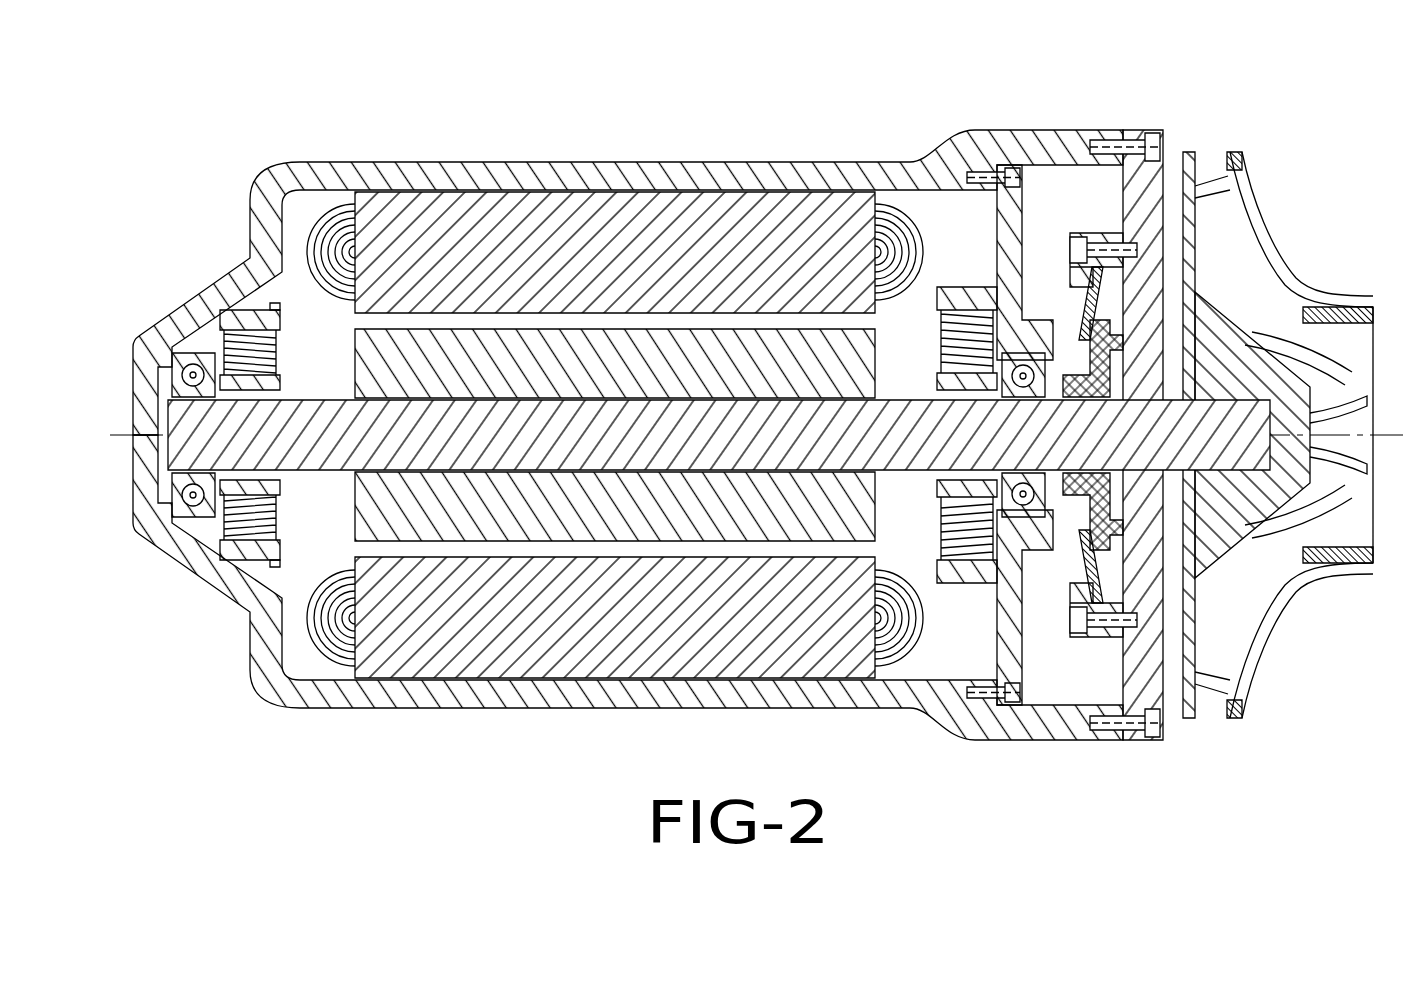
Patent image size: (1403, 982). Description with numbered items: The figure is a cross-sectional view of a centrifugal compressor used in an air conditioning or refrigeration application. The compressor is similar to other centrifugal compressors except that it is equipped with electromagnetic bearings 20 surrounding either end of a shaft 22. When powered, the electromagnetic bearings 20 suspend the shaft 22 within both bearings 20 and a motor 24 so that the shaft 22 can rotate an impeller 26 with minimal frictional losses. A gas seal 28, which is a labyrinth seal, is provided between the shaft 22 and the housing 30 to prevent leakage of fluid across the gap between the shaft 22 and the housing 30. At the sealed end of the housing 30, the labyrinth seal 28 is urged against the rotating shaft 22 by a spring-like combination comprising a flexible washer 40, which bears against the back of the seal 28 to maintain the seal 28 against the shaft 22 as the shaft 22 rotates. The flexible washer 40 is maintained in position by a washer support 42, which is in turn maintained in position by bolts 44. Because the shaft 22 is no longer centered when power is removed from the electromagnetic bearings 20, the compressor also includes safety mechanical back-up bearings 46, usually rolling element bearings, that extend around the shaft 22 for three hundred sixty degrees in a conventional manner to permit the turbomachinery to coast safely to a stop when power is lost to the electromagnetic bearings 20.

The electromagnetic bearings 20 is at (235, 317).
The shaft 22 is at (327, 407).
The motor 24 is at (501, 237).
The impeller 26 is at (1240, 177).
The gas seal 28 is at (1123, 342).
The housing 30 is at (656, 162).
The flexible washer 40 is at (1095, 300).
The washer support 42 is at (1100, 237).
The bolts 44 is at (1078, 248).
The mechanical back-up bearings 46 is at (183, 368).